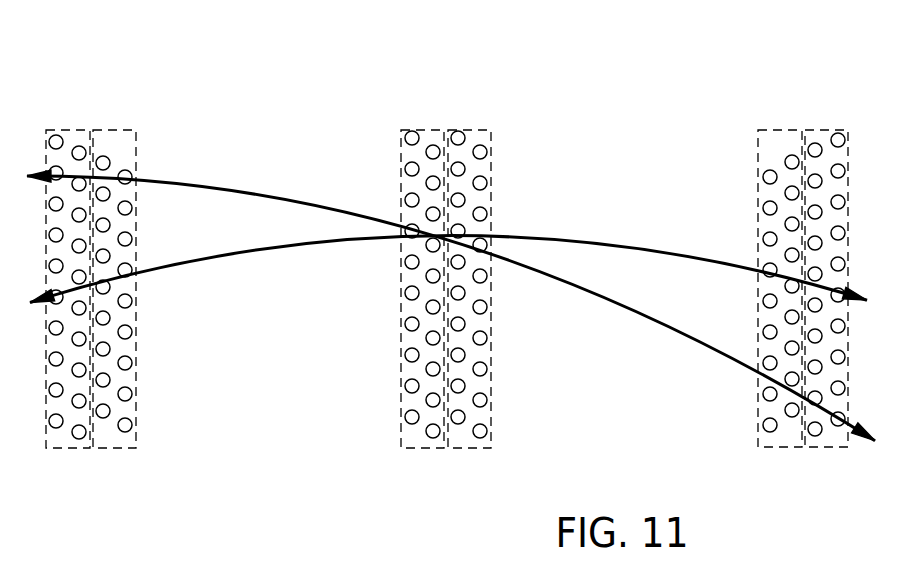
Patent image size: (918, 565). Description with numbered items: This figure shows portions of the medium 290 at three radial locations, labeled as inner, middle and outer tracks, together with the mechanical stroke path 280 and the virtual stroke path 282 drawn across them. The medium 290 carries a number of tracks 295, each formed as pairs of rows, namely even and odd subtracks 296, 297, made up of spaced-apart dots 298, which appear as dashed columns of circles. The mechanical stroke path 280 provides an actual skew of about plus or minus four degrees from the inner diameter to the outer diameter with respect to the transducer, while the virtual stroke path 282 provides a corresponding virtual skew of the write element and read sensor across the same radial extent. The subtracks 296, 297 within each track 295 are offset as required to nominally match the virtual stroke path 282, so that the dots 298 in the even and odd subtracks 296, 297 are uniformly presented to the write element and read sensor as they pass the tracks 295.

The medium 290 is at (736, 30).
The tracks 295 is at (115, 450).
The even subtrack 296 is at (412, 461).
The odd subtrack 297 is at (437, 461).
The dots 298 is at (482, 183).
The mechanical stroke path 280 is at (605, 304).
The virtual stroke path 282 is at (560, 238).